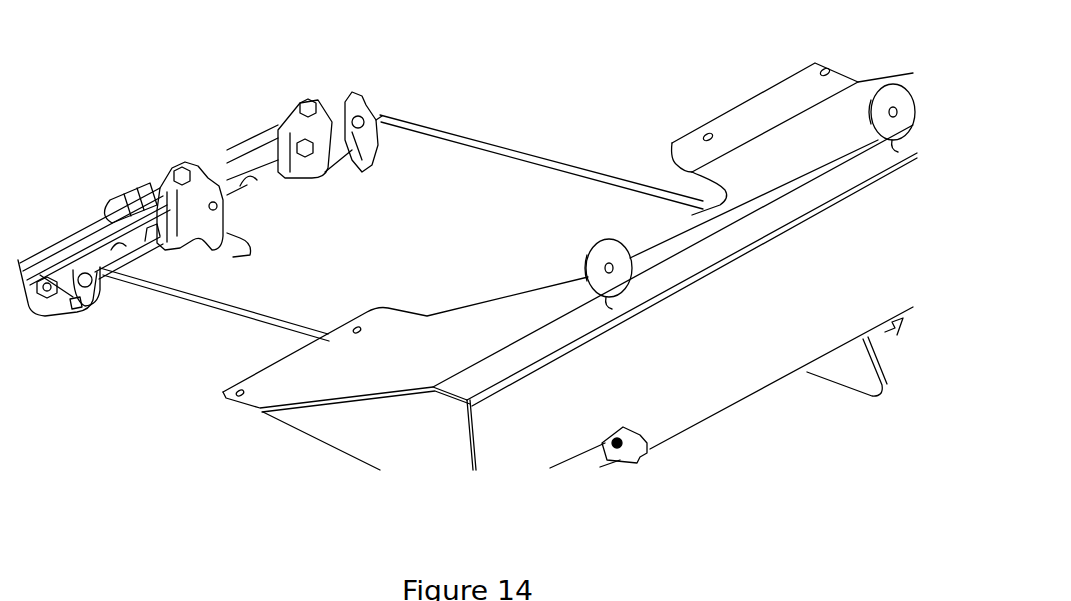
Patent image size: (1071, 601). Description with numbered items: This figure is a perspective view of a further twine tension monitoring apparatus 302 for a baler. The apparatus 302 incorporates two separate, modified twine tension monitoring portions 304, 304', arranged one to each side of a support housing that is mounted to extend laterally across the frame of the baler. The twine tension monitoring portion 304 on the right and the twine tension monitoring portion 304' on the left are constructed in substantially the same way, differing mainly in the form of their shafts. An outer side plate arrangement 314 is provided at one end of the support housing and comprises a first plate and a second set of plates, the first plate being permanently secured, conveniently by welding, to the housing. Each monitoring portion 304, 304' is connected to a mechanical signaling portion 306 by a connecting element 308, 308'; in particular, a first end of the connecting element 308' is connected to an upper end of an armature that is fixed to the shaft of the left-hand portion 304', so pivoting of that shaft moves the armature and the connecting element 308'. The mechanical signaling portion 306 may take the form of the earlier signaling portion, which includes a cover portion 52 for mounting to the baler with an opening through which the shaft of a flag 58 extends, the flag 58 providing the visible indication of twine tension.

The cover portion 52 is at (733, 347).
The flag 58 is at (892, 97).
The twine tension monitoring apparatus 302 is at (604, 60).
The twine tension monitoring portion 304 is at (289, 129).
The twine tension monitoring portion 304' is at (134, 235).
The mechanical signaling portion 306 is at (330, 474).
The connecting element 308 is at (541, 162).
The connecting element 308' is at (214, 299).
The outer side plate arrangement 314 is at (738, 591).